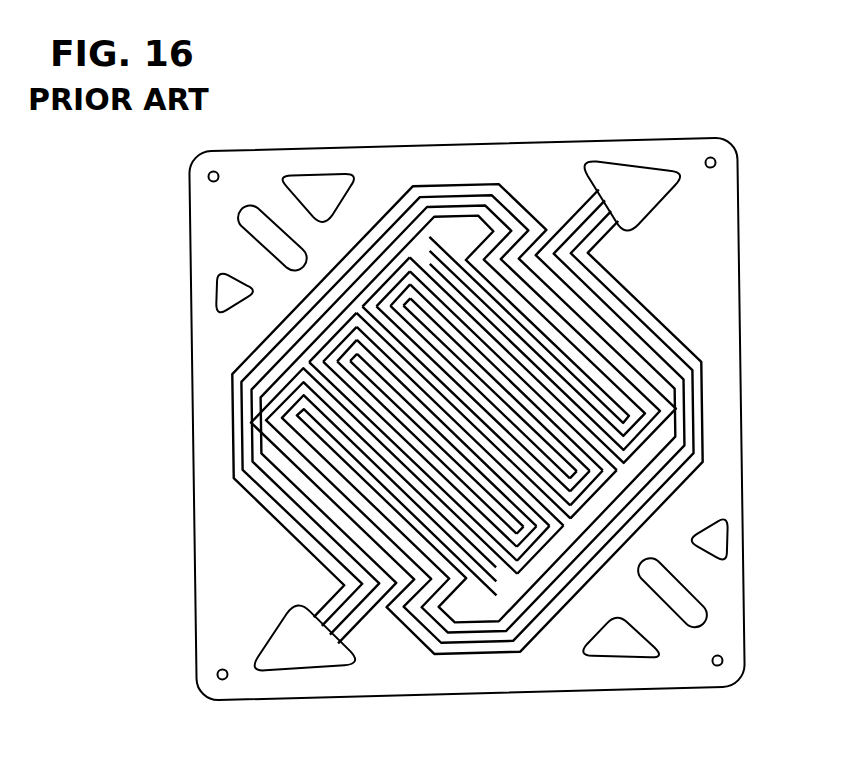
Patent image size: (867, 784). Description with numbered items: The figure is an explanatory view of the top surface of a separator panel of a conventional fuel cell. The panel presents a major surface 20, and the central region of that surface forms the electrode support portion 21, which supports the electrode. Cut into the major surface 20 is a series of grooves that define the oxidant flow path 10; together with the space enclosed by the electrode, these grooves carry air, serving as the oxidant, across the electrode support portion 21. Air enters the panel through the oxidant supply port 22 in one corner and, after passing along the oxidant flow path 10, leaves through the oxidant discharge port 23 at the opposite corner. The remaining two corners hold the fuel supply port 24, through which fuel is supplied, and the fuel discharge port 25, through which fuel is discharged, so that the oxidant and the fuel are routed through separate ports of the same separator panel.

The oxidant flow path 10 is at (566, 200).
The major surface 20 is at (468, 691).
The electrode support portion 21 is at (477, 381).
The oxidant supply port 22 is at (642, 178).
The oxidant discharge port 23 is at (300, 676).
The fuel supply port 24 is at (332, 182).
The fuel discharge port 25 is at (625, 672).